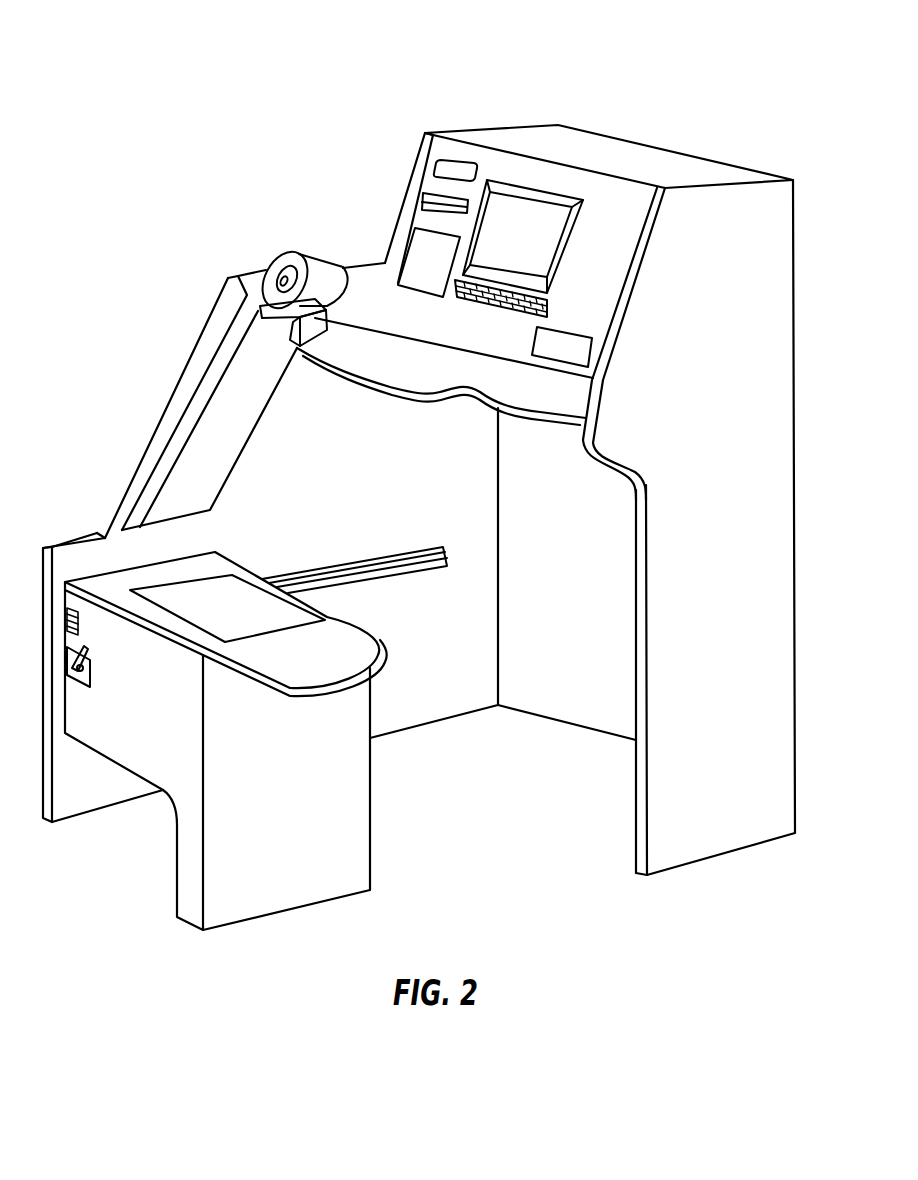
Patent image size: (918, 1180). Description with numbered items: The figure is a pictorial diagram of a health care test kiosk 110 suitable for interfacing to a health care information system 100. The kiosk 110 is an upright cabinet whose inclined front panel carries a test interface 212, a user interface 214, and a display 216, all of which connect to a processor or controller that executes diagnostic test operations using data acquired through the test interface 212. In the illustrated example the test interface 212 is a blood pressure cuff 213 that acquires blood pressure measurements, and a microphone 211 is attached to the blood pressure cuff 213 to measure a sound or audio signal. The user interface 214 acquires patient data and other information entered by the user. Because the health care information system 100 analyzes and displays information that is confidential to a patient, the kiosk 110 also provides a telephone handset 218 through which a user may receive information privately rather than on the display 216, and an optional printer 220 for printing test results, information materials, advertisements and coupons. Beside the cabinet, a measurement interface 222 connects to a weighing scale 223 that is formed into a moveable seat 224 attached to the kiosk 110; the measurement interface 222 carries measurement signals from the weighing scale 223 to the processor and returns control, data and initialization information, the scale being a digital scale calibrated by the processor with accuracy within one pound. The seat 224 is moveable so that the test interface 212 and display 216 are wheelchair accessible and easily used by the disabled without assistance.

The health care information system 100 is at (150, 70).
The health care test kiosk 110 is at (640, 143).
The microphone 211 is at (278, 270).
The test interface 212 is at (227, 412).
The blood pressure cuff 213 is at (291, 256).
The user interface 214 is at (547, 311).
The display 216 is at (525, 228).
The telephone handset 218 is at (442, 169).
The printer 220 is at (572, 348).
The measurement interface 222 is at (313, 605).
The weighing scale 223 is at (267, 618).
The moveable seat 224 is at (185, 648).